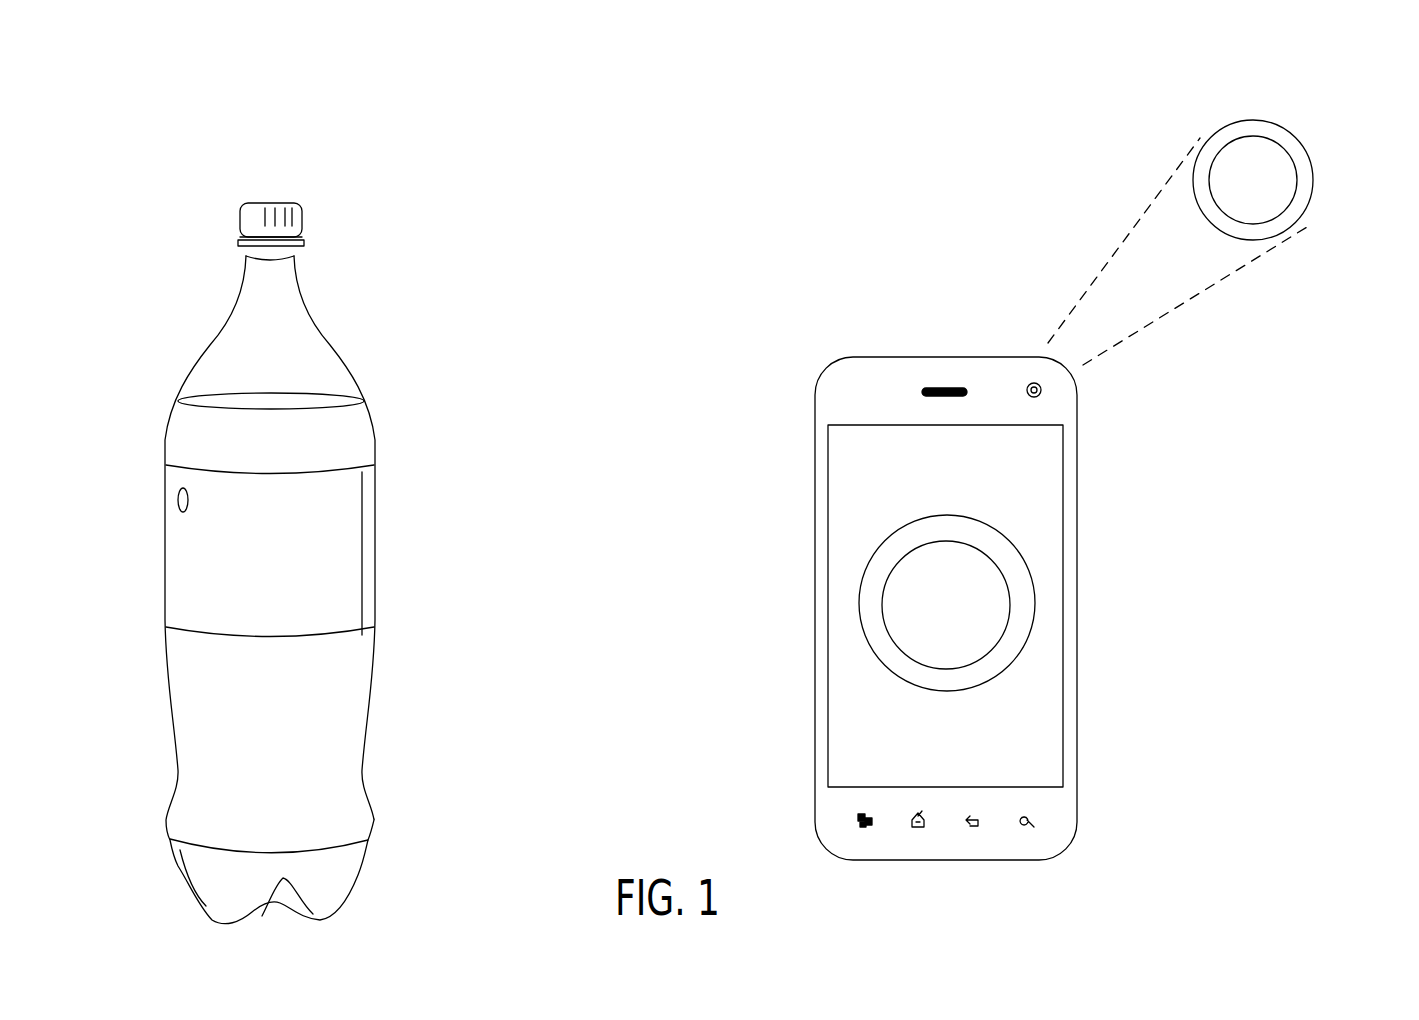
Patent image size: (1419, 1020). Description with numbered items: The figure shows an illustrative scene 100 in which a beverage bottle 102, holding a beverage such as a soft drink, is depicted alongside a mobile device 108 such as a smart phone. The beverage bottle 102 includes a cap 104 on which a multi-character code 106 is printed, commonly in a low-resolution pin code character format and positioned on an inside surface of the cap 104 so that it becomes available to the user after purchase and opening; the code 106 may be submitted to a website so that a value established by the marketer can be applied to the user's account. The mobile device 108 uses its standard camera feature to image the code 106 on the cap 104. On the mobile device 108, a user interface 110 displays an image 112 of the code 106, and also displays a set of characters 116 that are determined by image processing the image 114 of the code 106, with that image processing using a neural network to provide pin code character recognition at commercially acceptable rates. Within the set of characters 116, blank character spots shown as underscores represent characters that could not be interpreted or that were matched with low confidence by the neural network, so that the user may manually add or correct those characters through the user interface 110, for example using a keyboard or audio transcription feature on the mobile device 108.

The scene 100 is at (614, 98).
The beverage bottle 102 is at (343, 372).
The cap 104 is at (283, 202).
The multi-character code 106 is at (1289, 168).
The mobile device 108 is at (928, 355).
The user interface 110 is at (1028, 514).
The image 112 is at (1013, 577).
The image 114 is at (983, 617).
The set of characters 116 is at (1037, 732).